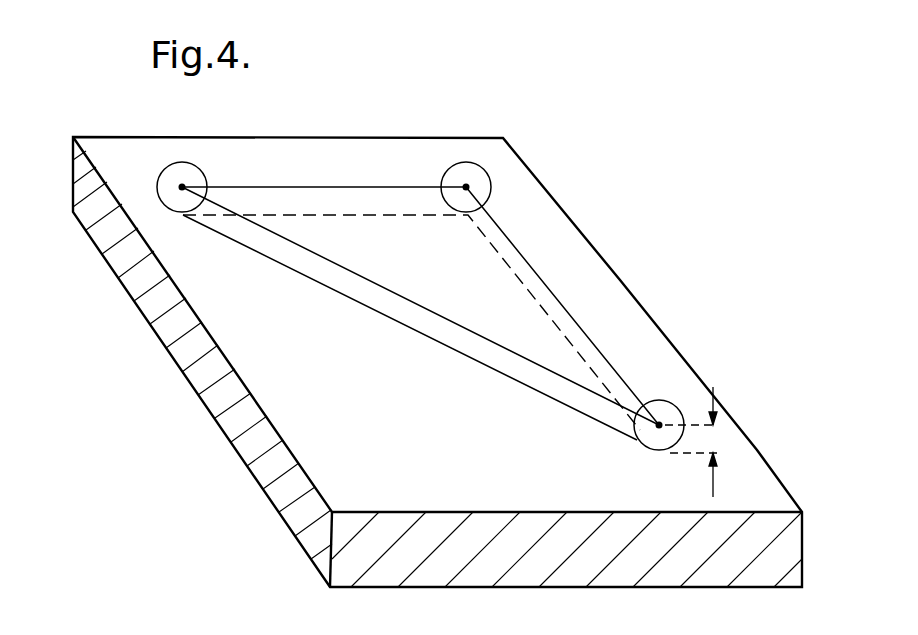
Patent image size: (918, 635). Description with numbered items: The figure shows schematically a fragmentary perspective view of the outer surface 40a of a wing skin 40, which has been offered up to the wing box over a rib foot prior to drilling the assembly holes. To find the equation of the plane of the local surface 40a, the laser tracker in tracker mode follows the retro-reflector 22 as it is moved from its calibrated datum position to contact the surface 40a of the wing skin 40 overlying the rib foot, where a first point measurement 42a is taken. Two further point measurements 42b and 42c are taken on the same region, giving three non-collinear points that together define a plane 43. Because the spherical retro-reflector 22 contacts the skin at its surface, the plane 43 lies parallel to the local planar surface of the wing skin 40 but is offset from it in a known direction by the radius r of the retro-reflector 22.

The wing skin 40 is at (333, 547).
The outer surface of the wing skin 40a is at (328, 288).
The plane 43 is at (318, 197).
The point measurement 42a is at (182, 187).
The point measurement 42b is at (466, 187).
The point measurement 42c is at (637, 441).
The retro-reflector 22 is at (492, 199).
The radius of the retro-reflector r is at (696, 442).